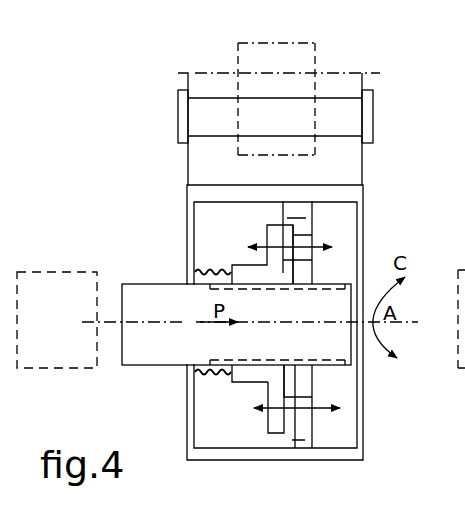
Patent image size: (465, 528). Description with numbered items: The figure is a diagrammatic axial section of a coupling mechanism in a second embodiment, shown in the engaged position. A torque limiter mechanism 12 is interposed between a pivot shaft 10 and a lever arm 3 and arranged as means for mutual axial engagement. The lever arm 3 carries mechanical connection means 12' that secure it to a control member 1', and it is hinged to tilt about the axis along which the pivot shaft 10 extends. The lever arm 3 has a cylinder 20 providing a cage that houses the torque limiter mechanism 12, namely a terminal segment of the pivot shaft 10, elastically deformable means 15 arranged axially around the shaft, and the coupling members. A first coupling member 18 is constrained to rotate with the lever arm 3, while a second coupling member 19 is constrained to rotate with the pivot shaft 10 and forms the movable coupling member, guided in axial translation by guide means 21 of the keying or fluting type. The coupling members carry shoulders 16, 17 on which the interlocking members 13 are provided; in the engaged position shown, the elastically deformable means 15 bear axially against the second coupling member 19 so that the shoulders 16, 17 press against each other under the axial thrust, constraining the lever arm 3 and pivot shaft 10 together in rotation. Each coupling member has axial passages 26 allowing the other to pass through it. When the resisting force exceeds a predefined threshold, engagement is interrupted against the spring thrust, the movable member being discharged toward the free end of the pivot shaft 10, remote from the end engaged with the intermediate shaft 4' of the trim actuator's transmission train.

The control member 1' is at (297, 97).
The mechanical connection means 12' is at (238, 116).
The lever arm 3 is at (187, 162).
The torque limiter mechanism 12 is at (212, 149).
The cylinder 20 is at (187, 198).
The shoulder 16 is at (283, 213).
The elastically deformable means 15 is at (205, 269).
The first coupling member 18 is at (319, 214).
The interlocking member 13 is at (318, 232).
The axial passages 26 is at (304, 329).
The pivot shaft 10 is at (155, 311).
The guide means 21 is at (210, 354).
The intermediate shaft 4' is at (57, 320).
The second coupling member 19 is at (257, 426).
The shoulder 17 is at (272, 434).